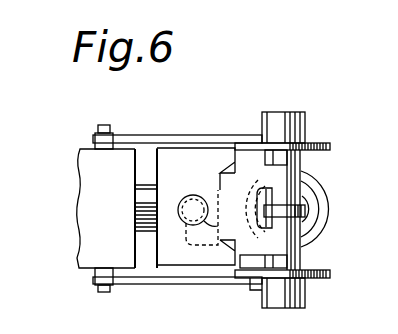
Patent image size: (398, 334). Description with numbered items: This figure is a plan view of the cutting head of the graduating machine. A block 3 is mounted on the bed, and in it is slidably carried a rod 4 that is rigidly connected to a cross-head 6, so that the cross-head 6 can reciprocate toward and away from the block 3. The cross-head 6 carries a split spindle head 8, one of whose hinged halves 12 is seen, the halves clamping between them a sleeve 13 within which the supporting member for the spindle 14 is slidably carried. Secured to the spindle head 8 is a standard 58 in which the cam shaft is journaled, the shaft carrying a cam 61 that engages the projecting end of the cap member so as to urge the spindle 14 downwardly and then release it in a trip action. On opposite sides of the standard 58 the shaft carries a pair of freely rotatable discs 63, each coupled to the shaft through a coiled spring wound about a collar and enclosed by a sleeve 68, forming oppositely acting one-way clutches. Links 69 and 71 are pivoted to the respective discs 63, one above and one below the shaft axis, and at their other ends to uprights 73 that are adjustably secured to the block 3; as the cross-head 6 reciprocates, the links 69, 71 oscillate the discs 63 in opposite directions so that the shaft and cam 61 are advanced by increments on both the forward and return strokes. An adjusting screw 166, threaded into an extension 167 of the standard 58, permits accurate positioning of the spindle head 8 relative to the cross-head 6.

The block 3 is at (93, 240).
The rod 4 is at (151, 237).
The cross-head 6 is at (170, 265).
The spindle head 8 is at (338, 214).
The hinged half of spindle head 12 is at (322, 198).
The sleeve 13 is at (361, 230).
The spindle 14 is at (312, 242).
The standard 58 is at (252, 175).
The cam 61 is at (303, 205).
The discs 63 is at (322, 143).
The sleeve 68 is at (300, 126).
The link 69 is at (204, 284).
The link 71 is at (188, 133).
The uprights 73 is at (93, 143).
The adjusting screw 166 is at (186, 226).
The extension 167 is at (208, 196).